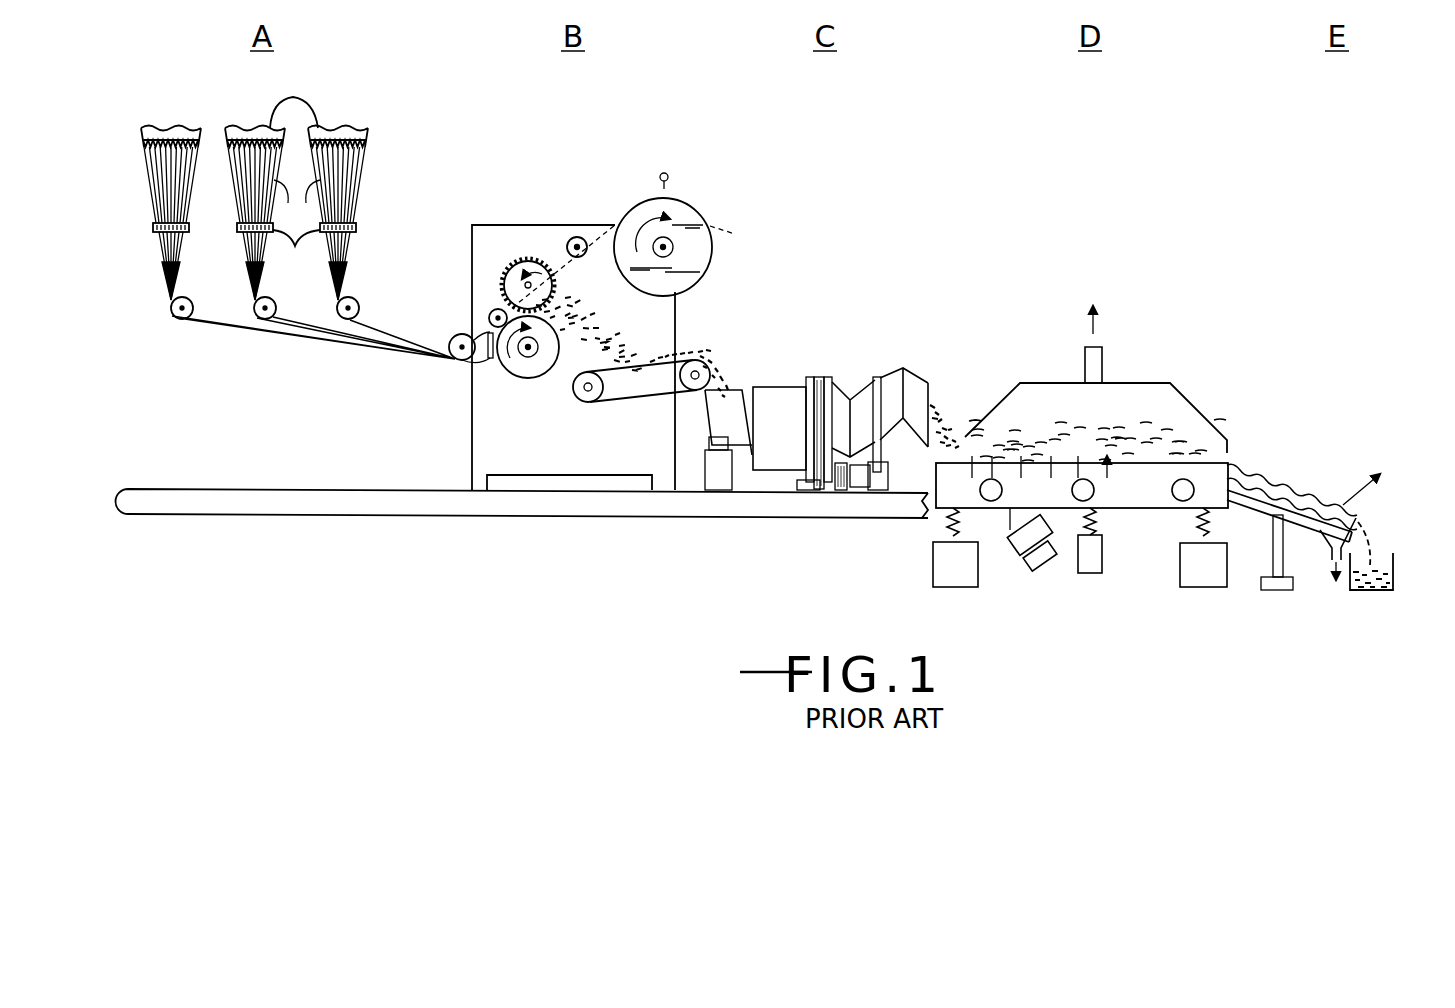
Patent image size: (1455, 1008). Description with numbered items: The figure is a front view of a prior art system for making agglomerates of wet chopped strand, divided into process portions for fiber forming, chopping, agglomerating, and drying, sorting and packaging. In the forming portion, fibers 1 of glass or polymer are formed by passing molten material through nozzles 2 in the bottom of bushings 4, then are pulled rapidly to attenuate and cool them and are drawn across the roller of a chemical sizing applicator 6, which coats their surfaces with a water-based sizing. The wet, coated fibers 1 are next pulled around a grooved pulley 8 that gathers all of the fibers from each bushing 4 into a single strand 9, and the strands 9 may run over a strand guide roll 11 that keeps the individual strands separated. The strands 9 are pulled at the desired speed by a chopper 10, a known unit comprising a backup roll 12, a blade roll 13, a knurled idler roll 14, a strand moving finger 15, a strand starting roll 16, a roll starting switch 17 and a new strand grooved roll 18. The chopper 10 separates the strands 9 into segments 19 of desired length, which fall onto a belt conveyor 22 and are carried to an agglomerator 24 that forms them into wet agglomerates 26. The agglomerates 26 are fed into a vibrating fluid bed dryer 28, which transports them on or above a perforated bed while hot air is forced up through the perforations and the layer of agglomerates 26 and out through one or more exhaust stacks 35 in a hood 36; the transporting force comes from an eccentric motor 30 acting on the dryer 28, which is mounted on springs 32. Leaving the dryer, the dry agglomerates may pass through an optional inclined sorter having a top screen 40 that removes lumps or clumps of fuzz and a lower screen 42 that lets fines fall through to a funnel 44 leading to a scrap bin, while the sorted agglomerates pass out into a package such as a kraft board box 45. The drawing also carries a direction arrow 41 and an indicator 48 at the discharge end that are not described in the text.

The fibers 1 is at (297, 197).
The nozzles 2 is at (152, 133).
The bushings 4 is at (292, 95).
The chemical sizing applicator 6 is at (296, 251).
The grooved pulley 8 is at (262, 306).
The strand 9 is at (299, 329).
The chopper 10 is at (495, 218).
The strand guide roll 11 is at (450, 337).
The backup roll 12 is at (522, 372).
The blade roll 13 is at (556, 285).
The knurled idler roll 14 is at (490, 315).
The strand moving finger 15 is at (487, 360).
The strand starting roll 16 is at (686, 215).
The roll starting switch 17 is at (671, 175).
The new strand grooved roll 18 is at (575, 237).
The segments 19 is at (610, 332).
The belt conveyor 22 is at (652, 395).
The agglomerator 24 is at (822, 370).
The agglomerates 26 is at (946, 440).
The vibrating fluid bed dryer 28 is at (1160, 373).
The eccentric motor 30 is at (1018, 545).
The springs 32 is at (1200, 525).
The exhaust stacks 35 is at (1102, 347).
The hood 36 is at (1030, 380).
The top screen 40 is at (1322, 495).
The outlet direction 41 is at (1375, 473).
The lower screen 42 is at (1347, 527).
The funnel 44 is at (1322, 535).
The kraft board box 45 is at (1393, 565).
The product mat 48 is at (1250, 444).